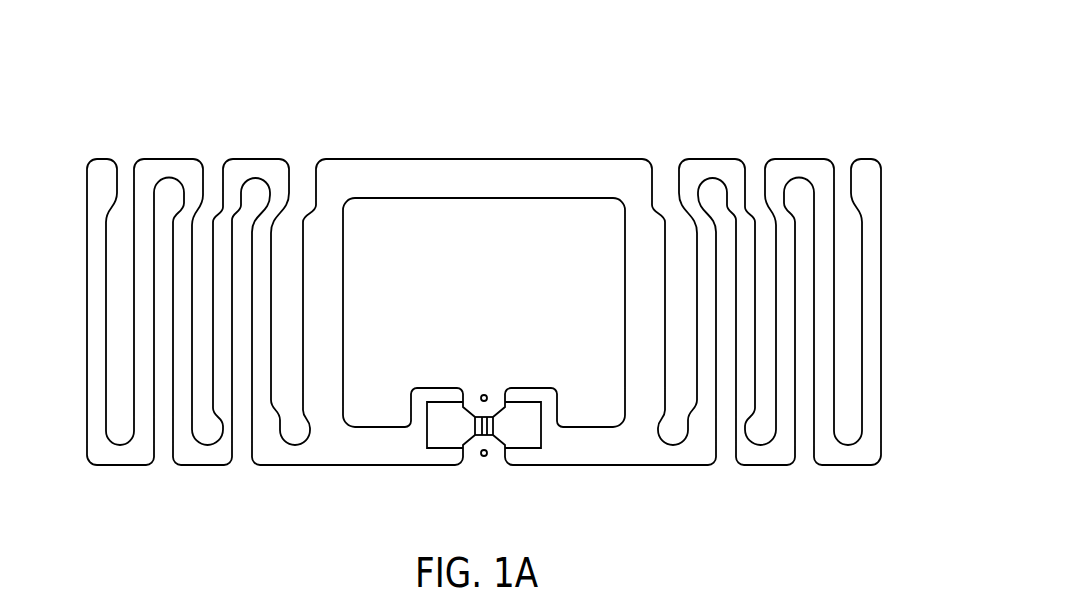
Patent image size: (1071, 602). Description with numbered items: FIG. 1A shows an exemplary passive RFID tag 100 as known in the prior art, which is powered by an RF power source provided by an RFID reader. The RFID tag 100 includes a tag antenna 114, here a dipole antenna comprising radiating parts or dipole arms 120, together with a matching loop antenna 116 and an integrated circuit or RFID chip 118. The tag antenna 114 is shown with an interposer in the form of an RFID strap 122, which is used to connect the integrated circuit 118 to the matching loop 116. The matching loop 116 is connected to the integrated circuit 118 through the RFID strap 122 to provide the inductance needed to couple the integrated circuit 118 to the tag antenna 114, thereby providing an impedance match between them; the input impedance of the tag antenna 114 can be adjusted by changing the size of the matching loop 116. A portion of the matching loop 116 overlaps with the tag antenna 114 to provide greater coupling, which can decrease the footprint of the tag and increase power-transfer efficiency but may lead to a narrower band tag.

The passive RFID tag 100 is at (870, 133).
The tag antenna 114 is at (280, 118).
The matching loop antenna 116 is at (525, 155).
The integrated circuit 118 is at (489, 438).
The dipole arms 120 is at (85, 369).
The RFID strap 122 is at (435, 445).